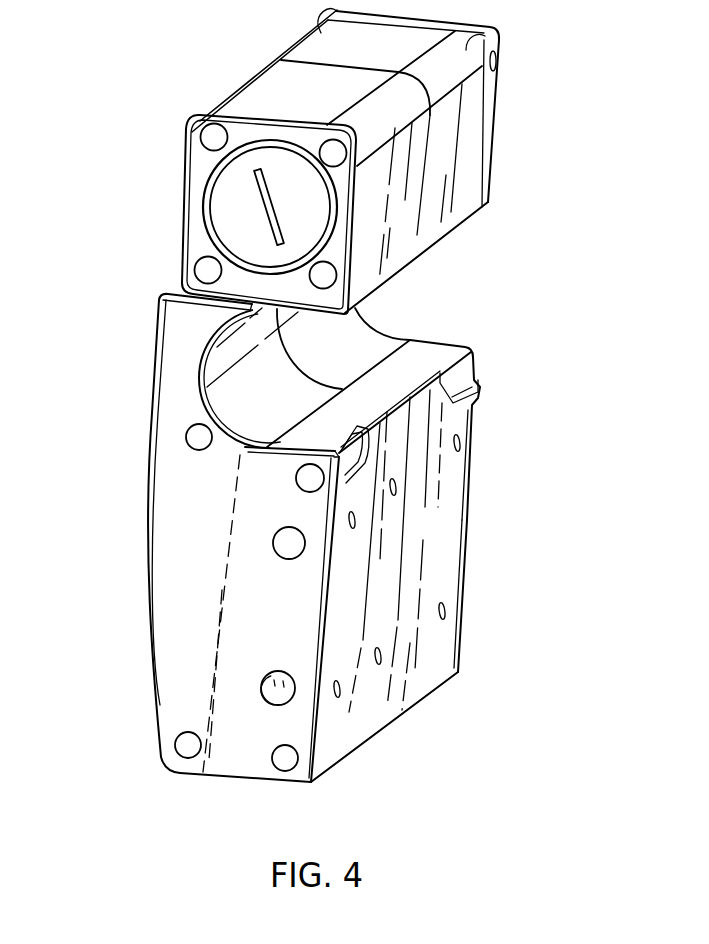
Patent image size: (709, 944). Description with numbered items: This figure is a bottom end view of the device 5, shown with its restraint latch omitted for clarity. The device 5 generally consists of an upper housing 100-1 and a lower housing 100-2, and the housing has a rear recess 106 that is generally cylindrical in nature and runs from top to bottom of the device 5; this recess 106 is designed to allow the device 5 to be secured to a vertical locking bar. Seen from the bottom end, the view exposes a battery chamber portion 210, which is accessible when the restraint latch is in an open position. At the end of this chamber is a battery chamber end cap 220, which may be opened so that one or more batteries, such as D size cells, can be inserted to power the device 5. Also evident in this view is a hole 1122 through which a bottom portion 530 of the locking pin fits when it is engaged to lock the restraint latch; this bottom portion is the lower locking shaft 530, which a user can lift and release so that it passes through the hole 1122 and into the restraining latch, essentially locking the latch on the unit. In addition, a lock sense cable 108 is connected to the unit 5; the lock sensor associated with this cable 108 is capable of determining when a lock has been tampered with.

The rear recess 106 is at (543, 300).
The battery chamber portion 210 is at (482, 133).
The battery chamber end cap 220 is at (230, 217).
The hole 1122 is at (205, 272).
The lower locking shaft 530 is at (175, 283).
The device 5 is at (146, 528).
The lock sense cable 108 is at (293, 547).
The upper housing 100-1 is at (433, 653).
The lower housing 100-2 is at (332, 728).